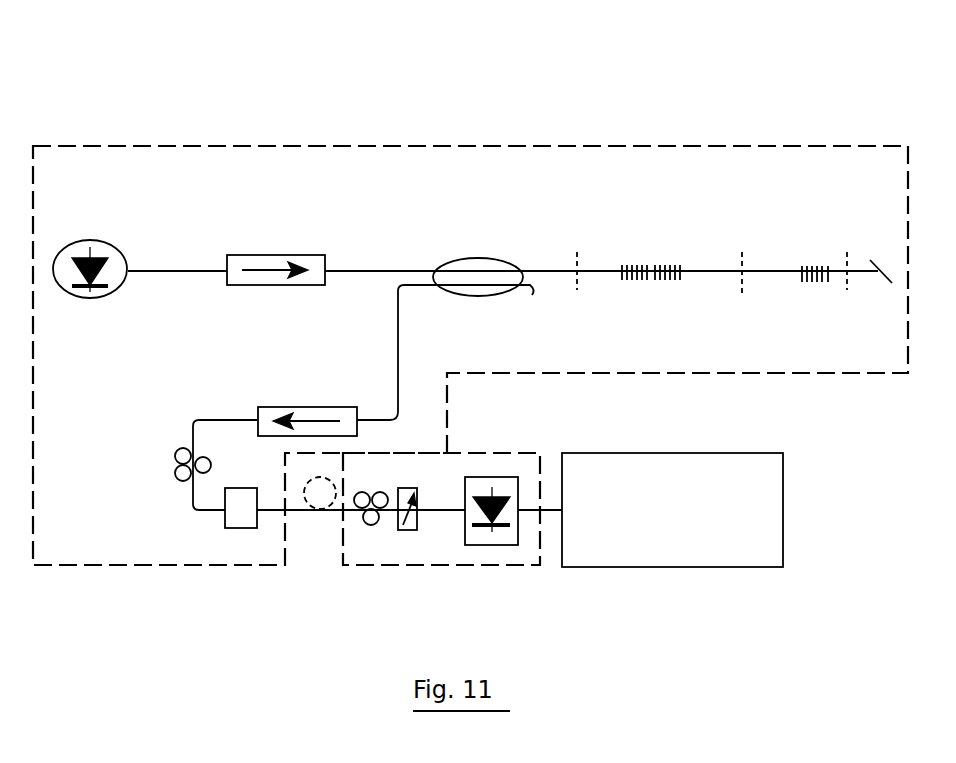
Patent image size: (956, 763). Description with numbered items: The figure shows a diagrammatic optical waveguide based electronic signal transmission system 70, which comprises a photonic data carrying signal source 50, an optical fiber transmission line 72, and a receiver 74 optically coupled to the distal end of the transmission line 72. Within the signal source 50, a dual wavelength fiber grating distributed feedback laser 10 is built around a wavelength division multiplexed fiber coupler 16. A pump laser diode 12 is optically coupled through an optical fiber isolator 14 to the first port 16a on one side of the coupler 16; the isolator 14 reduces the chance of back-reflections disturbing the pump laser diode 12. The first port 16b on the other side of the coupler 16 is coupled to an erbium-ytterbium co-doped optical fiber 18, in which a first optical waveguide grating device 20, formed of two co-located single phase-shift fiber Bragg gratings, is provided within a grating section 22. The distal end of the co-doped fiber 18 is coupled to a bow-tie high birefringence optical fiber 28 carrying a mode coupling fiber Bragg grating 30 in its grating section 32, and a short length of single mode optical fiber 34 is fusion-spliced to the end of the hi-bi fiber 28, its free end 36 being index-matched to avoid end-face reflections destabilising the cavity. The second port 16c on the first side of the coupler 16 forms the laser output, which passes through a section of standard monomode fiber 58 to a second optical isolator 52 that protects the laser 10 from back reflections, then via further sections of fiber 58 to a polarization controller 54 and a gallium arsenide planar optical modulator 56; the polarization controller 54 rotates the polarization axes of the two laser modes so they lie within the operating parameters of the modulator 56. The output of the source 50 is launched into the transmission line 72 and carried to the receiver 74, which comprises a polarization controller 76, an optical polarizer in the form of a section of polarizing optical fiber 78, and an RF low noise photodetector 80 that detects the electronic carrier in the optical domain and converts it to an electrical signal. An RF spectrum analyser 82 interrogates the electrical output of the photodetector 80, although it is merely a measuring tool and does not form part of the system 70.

The dual wavelength fiber grating distributed feedback laser 10 is at (735, 135).
The pump laser diode 12 is at (102, 240).
The optical fiber isolator 14 is at (285, 255).
The wavelength division multiplexed fiber coupler 16 is at (475, 258).
The first port 16a is at (437, 268).
The first port on the other side 16b is at (522, 267).
The second port 16c is at (437, 290).
The erbium-ytterbium co-doped optical fiber 18 is at (600, 272).
The first optical waveguide grating device 20 is at (647, 280).
The grating section 22 is at (653, 255).
The high birefringence optical fiber 28 is at (767, 271).
The mode coupling fiber Bragg grating 30 is at (815, 280).
The grating section 32 is at (817, 253).
The single mode optical fiber 34 is at (863, 272).
The free end 36 is at (872, 262).
The photonic data carrying signal source 50 is at (78, 518).
The second optical isolator 52 is at (263, 407).
The polarization controller 54 is at (177, 468).
The gallium arsenide planar optical modulator 56 is at (243, 488).
The standard monomode fiber 58 is at (397, 393).
The optical waveguide based electronic signal transmission system 70 is at (428, 93).
The optical fiber transmission line 72 is at (322, 527).
The receiver 74 is at (459, 568).
The polarization controller 76 is at (374, 526).
The polarizing optical fiber 78 is at (405, 488).
The RF low noise photodetector 80 is at (465, 522).
The RF spectrum analyser 82 is at (703, 545).